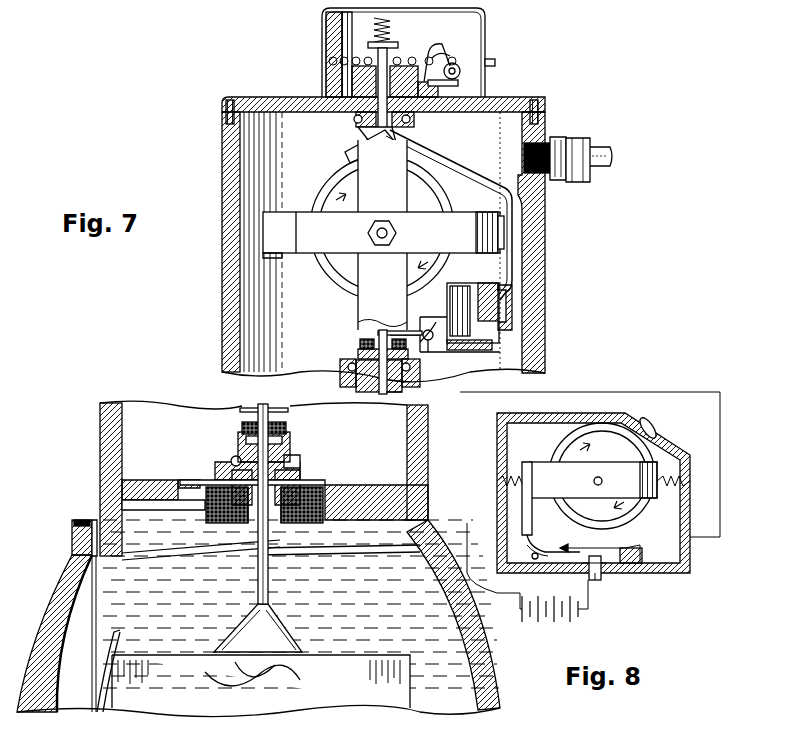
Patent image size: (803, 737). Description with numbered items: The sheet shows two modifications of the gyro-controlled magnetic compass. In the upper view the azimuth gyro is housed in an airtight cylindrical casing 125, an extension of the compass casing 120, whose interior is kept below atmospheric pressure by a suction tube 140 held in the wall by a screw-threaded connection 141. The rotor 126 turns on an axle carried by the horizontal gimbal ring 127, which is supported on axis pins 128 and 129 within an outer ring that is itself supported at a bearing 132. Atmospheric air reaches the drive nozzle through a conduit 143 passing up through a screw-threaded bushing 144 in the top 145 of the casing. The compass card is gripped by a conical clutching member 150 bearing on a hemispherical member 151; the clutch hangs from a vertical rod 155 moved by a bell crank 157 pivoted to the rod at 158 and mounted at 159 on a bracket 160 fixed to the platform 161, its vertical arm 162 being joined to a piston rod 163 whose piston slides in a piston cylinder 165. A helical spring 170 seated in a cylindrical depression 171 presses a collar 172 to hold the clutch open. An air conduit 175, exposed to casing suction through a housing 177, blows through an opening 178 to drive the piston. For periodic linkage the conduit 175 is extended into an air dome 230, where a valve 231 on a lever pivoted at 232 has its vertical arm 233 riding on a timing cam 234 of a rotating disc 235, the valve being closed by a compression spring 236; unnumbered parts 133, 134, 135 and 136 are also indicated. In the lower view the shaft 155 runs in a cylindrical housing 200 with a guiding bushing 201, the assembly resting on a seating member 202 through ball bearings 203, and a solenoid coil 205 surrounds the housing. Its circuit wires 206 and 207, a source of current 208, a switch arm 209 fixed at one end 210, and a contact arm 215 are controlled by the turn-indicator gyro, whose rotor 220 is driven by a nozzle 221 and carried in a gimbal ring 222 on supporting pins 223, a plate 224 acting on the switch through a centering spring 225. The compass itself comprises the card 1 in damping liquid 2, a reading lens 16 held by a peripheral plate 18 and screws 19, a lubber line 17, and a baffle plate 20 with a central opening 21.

In FIG. 8, the compass card 1 is at (185, 698).
In FIG. 8, the damping liquid 2 is at (112, 574).
In FIG. 8, the reading lens 16 is at (40, 627).
In FIG. 8, the lubber line 17 is at (122, 643).
In FIG. 8, the peripheral plate 18 is at (90, 550).
In FIG. 8, the screws 19 is at (73, 536).
In FIG. 8, the baffle plate 20 is at (176, 555).
In FIG. 8, the central opening 21 is at (238, 553).
In FIG. 8, the compass casing 120 is at (496, 700).
In FIG. 7, the cylindrical casing 125 is at (224, 262).
In FIG. 8, the cylindrical casing 125 is at (106, 440).
In FIG. 7, the rotor 126 is at (436, 196).
In FIG. 7, the horizontal gimbal ring 127 is at (488, 208).
In FIG. 7, the axis pin 128 is at (504, 232).
In FIG. 7, the axis pin 129 is at (262, 232).
In FIG. 7, the bearing 132 is at (388, 226).
In FIG. 7, the valve seat 133 is at (410, 119).
In FIG. 7, the base 134 is at (358, 386).
In FIG. 7, the base flange 135 is at (340, 378).
In FIG. 8, the housing bottom 136 is at (150, 497).
In FIG. 7, the suction tube 140 is at (604, 146).
In FIG. 7, the screw-threaded connection 141 is at (560, 140).
In FIG. 7, the conduit 143 is at (326, 72).
In FIG. 7, the screw-threaded bushing 144 is at (328, 92).
In FIG. 7, the top of casing 145 is at (262, 99).
In FIG. 8, the conical clutching member 150 is at (292, 640).
In FIG. 8, the hemispherical member 151 is at (300, 676).
In FIG. 7, the vertical rod 155 is at (404, 391).
In FIG. 8, the vertical rod 155 is at (248, 436).
In FIG. 7, the bell crank 157 is at (395, 334).
In FIG. 7, the pivot 158 is at (378, 334).
In FIG. 7, the pivot 159 is at (437, 328).
In FIG. 7, the bracket 160 is at (428, 344).
In FIG. 7, the platform 161 is at (470, 353).
In FIG. 7, the vertical arm 162 is at (405, 318).
In FIG. 7, the piston rod 163 is at (444, 294).
In FIG. 7, the piston cylinder 165 is at (500, 300).
In FIG. 7, the helical spring 170 is at (360, 356).
In FIG. 8, the helical spring 170 is at (288, 428).
In FIG. 8, the cylindrical depression 171 is at (240, 438).
In FIG. 7, the collar 172 is at (360, 345).
In FIG. 8, the collar 172 is at (242, 410).
In FIG. 7, the air conduit 175 is at (452, 164).
In FIG. 7, the housing 177 is at (513, 318).
In FIG. 7, the opening 178 is at (475, 344).
In FIG. 8, the cylindrical housing 200 is at (302, 527).
In FIG. 8, the guiding bushing 201 is at (297, 462).
In FIG. 8, the seating member 202 is at (255, 464).
In FIG. 8, the ball bearings 203 is at (296, 456).
In FIG. 8, the solenoid coil 205 is at (204, 514).
In FIG. 8, the wire 206 is at (566, 393).
In FIG. 8, the wire 207 is at (508, 600).
In FIG. 8, the source of current 208 is at (558, 612).
In FIG. 8, the switch arm 209 is at (530, 571).
In FIG. 8, the fixed end 210 is at (600, 574).
In FIG. 8, the contact arm 215 is at (618, 546).
In FIG. 8, the gyro rotor 220 is at (655, 445).
In FIG. 8, the nozzle 221 is at (644, 418).
In FIG. 8, the horizontal gimbal ring 222 is at (660, 470).
In FIG. 8, the supporting pins 223 is at (496, 480).
In FIG. 8, the plate 224 is at (522, 516).
In FIG. 8, the centering spring 225 is at (542, 510).
In FIG. 7, the air dome 230 is at (484, 28).
In FIG. 7, the valve 231 is at (386, 44).
In FIG. 7, the pivot 232 is at (440, 42).
In FIG. 7, the vertical arm 233 is at (448, 52).
In FIG. 7, the timing cam 234 is at (470, 66).
In FIG. 7, the rotating disc 235 is at (458, 79).
In FIG. 7, the compression spring 236 is at (374, 22).